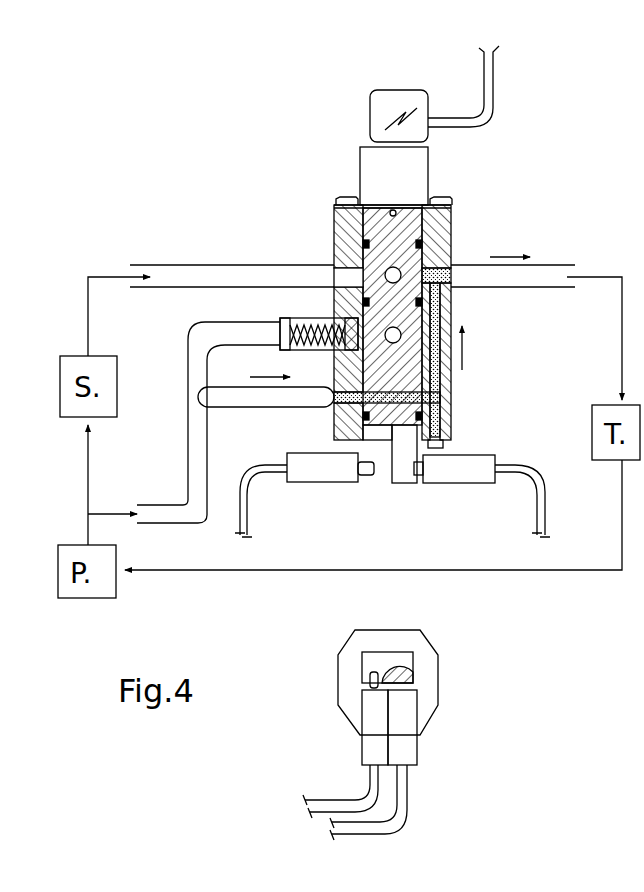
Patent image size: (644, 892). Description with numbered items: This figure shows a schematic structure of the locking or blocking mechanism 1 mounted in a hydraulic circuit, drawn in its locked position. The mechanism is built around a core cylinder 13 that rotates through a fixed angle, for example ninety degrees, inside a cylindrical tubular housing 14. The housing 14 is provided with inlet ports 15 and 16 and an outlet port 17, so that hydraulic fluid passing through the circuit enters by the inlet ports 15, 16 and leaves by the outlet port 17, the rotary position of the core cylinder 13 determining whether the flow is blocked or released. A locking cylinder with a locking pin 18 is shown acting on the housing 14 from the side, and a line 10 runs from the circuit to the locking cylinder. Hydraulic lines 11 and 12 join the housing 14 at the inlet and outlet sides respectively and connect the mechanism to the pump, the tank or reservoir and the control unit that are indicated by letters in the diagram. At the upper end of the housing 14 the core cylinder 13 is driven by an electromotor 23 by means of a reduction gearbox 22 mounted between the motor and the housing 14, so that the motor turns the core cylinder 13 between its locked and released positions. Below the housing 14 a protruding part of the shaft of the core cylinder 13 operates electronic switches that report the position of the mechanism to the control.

The locking mechanism 1 is at (460, 211).
The pipe 10 is at (207, 443).
The supply line 11 is at (217, 267).
The outlet line 12 is at (501, 280).
The core cylinder 13 is at (405, 358).
The cylindrical tubular housing 14 is at (346, 242).
The inlet port 15 is at (337, 268).
The inlet port 16 is at (337, 398).
The outlet port 17 is at (455, 268).
The locking pin 18 is at (280, 346).
The reduction gearbox 22 is at (405, 176).
The electromotor 23 is at (392, 107).